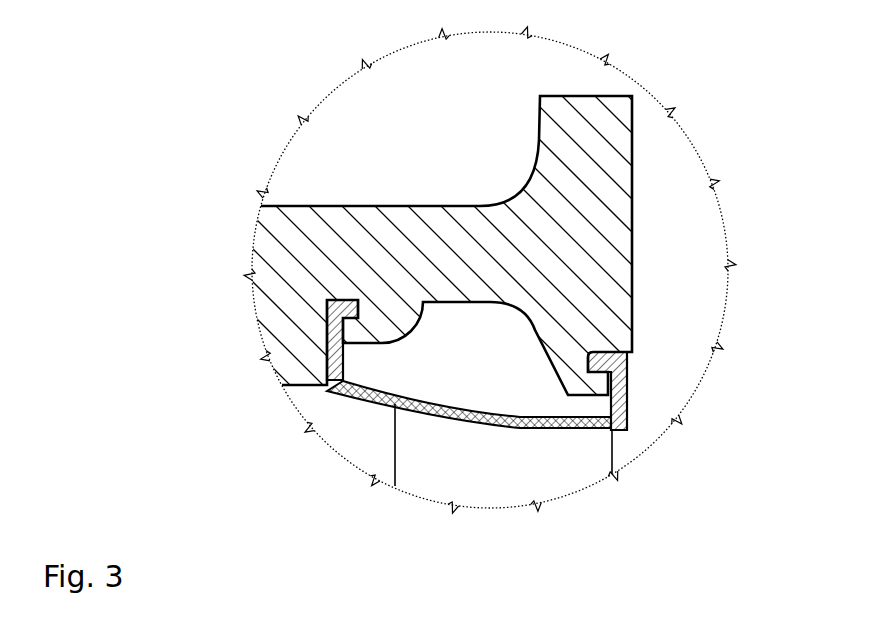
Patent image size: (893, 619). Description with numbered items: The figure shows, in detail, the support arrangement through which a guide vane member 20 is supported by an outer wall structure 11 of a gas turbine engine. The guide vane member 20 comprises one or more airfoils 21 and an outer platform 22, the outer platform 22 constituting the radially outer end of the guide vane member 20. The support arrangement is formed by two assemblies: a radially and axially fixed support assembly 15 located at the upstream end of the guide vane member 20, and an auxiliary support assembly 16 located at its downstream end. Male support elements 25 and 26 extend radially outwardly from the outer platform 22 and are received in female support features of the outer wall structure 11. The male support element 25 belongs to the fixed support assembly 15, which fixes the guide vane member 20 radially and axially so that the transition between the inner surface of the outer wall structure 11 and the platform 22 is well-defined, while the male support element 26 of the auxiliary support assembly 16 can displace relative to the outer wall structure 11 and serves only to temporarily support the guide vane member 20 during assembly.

The outer wall structure 11 is at (377, 265).
The radially and axially fixed support assembly 15 is at (253, 371).
The auxiliary support assembly 16 is at (670, 402).
The guide vane member 20 is at (541, 469).
The airfoil 21 is at (457, 482).
The outer platform 22 is at (365, 395).
The male support element 25 is at (331, 355).
The male support element 26 is at (620, 398).